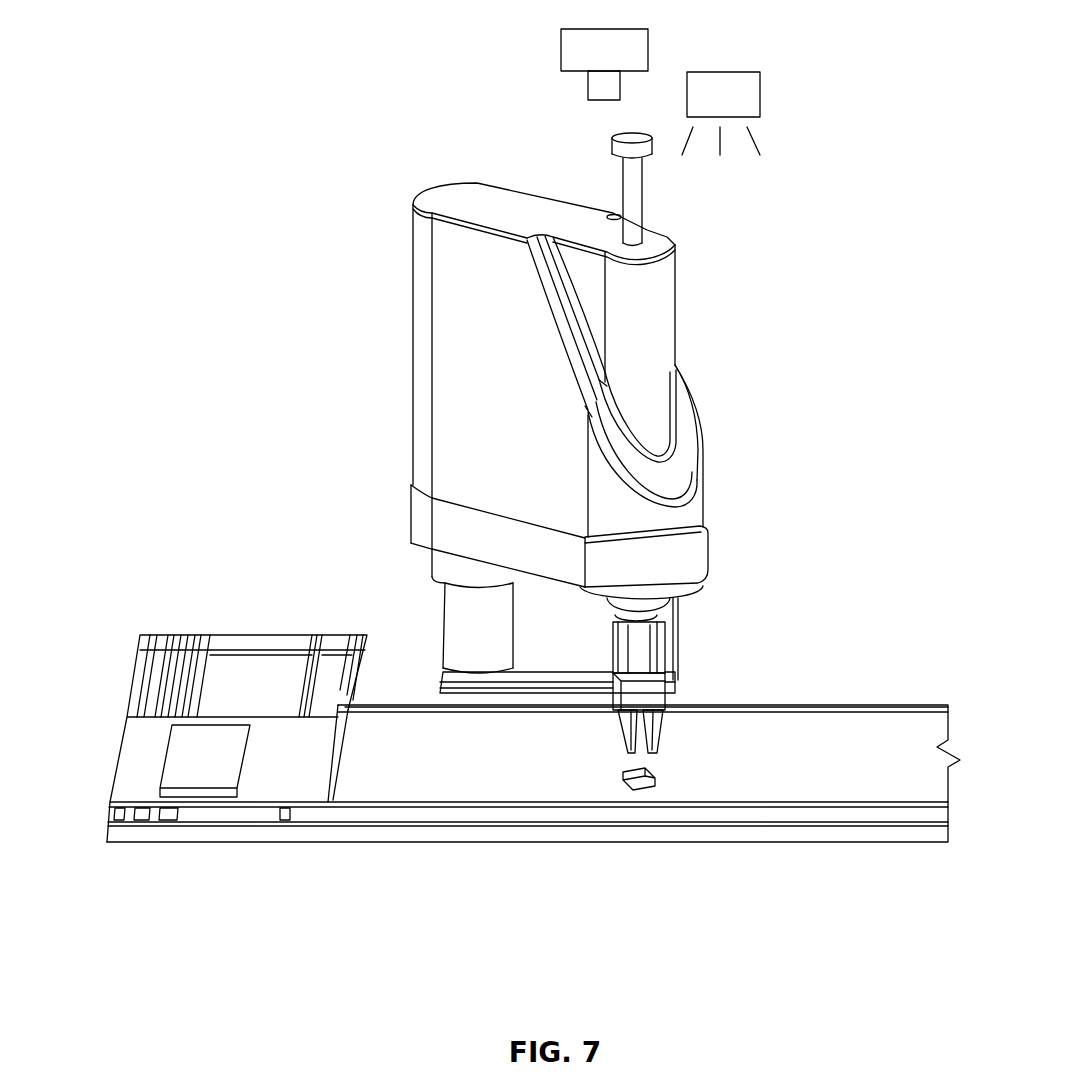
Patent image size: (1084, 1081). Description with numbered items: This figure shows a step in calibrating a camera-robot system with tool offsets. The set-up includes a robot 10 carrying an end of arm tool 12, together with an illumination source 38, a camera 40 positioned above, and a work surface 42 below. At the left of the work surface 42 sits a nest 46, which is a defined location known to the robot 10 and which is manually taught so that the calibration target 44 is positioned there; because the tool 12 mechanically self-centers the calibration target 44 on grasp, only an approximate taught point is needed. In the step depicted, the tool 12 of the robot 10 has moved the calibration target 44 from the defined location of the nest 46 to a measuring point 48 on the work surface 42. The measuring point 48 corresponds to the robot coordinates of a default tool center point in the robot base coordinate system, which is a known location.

The robot 10 is at (524, 423).
The tool 12 is at (617, 728).
The illumination source 38 is at (708, 109).
The camera 40 is at (590, 61).
The work surface 42 is at (452, 775).
The calibration target 44 is at (660, 772).
The nest 46 is at (112, 664).
The measuring point 48 is at (627, 784).